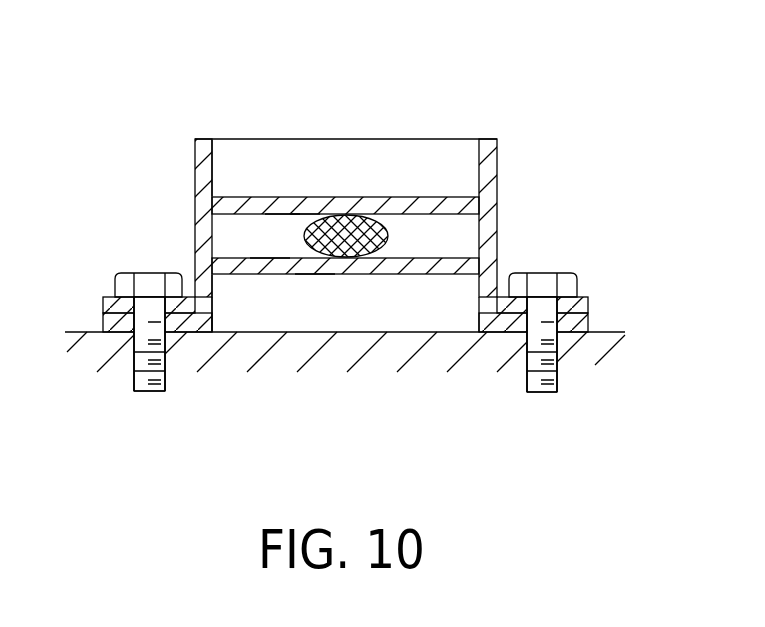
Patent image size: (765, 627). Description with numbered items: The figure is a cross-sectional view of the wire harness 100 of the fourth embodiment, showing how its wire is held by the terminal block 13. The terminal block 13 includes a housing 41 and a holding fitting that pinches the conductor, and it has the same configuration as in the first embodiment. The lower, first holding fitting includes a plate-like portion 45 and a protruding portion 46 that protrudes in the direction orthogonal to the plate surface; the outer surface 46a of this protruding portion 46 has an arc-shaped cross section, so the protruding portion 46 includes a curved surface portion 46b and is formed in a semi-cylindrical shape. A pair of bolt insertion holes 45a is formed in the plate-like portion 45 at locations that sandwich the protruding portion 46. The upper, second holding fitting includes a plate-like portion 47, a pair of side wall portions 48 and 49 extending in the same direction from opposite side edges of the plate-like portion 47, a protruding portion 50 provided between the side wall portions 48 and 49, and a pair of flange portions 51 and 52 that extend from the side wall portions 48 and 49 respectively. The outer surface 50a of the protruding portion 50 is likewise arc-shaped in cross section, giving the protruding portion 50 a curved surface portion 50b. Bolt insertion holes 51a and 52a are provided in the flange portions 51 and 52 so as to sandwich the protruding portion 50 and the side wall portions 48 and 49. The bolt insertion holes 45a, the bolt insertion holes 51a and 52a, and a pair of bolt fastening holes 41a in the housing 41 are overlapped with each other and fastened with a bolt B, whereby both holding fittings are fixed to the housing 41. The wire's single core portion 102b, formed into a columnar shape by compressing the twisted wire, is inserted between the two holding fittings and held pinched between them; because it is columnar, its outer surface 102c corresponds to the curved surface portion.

The wire harness 100 is at (654, 131).
The terminal block 13 is at (95, 334).
The housing 41 is at (597, 367).
The bolt fastening hole 41a is at (157, 373).
The plate-like portion 45 is at (592, 323).
The bolt insertion hole 45a is at (137, 335).
The protruding portion 46 is at (229, 278).
The outer surface 46a is at (268, 253).
The curved surface portion 46b is at (313, 278).
The plate-like portion 47 is at (430, 139).
The side wall portion 48 is at (203, 140).
The side wall portion 49 is at (487, 145).
The protruding portion 50 is at (255, 200).
The outer surface 50a is at (283, 219).
The curved surface portion 50b is at (300, 220).
The flange portion 51 is at (108, 297).
The bolt insertion hole 51a is at (150, 300).
The flange portion 52 is at (582, 297).
The bolt insertion hole 52a is at (552, 305).
The single core portion 102b is at (372, 204).
The outer surface 102c is at (374, 263).
The bolt B is at (150, 393).